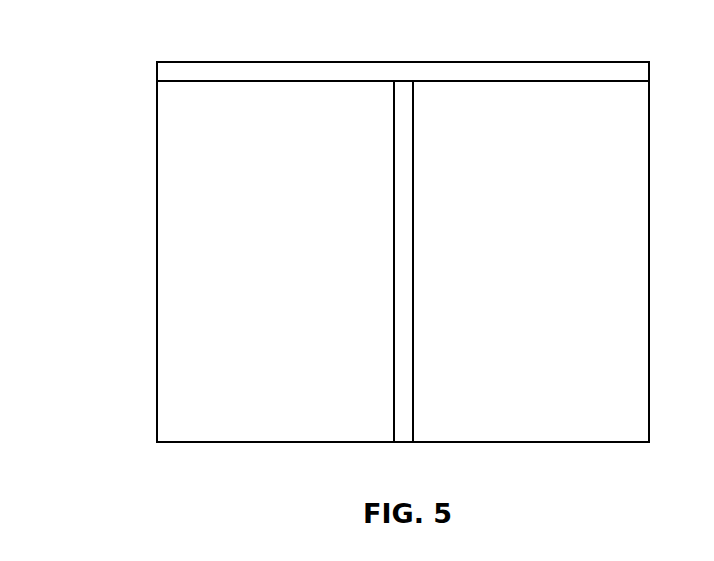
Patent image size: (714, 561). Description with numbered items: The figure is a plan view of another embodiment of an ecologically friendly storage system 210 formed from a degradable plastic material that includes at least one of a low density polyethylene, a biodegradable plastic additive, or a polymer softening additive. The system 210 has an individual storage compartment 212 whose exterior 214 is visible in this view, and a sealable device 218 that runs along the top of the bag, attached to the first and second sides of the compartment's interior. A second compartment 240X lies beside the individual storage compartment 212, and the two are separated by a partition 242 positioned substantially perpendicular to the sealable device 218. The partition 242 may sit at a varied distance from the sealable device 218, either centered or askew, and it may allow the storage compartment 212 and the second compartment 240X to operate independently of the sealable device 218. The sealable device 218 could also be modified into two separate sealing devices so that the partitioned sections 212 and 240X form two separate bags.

The storage system 210 is at (124, 50).
The individual storage compartment 212 is at (298, 272).
The exterior 214 is at (595, 430).
The sealable device 218 is at (593, 72).
The second compartment 240X is at (562, 272).
The partition 242 is at (402, 153).